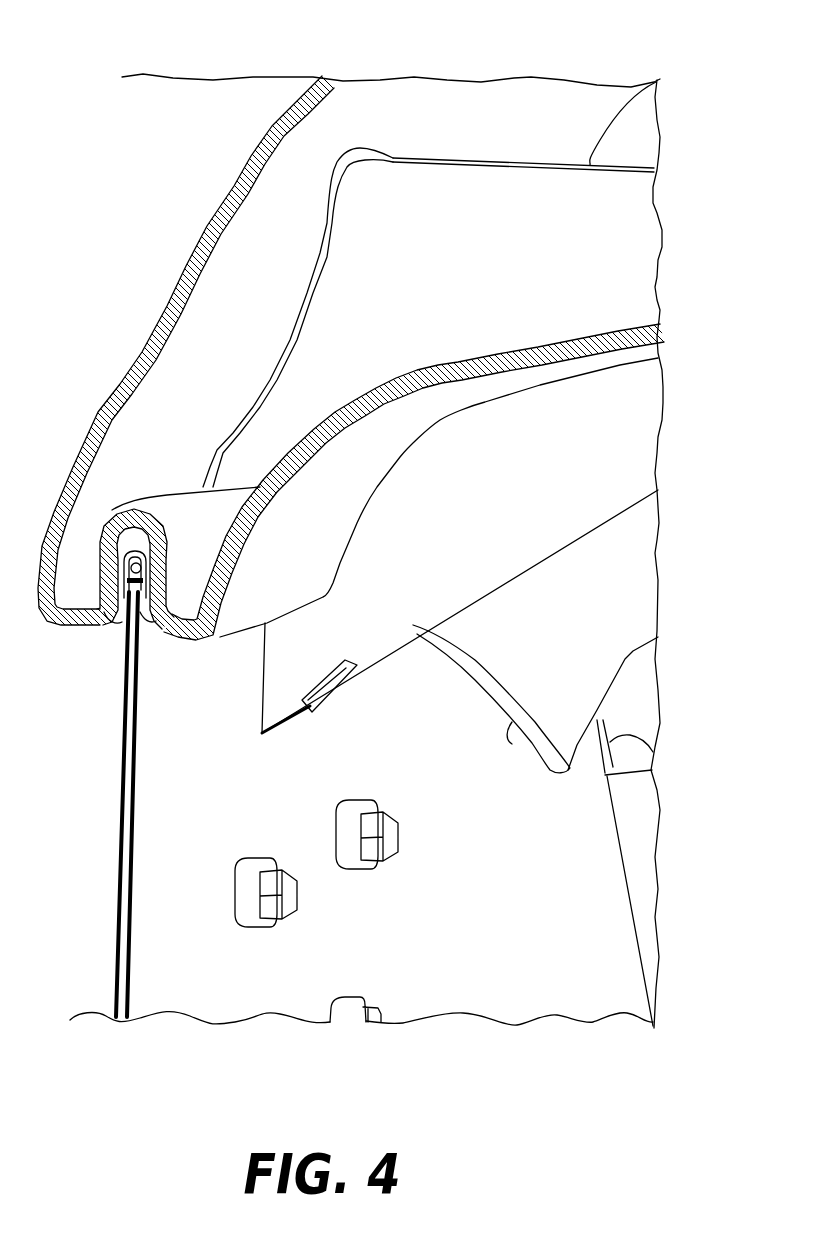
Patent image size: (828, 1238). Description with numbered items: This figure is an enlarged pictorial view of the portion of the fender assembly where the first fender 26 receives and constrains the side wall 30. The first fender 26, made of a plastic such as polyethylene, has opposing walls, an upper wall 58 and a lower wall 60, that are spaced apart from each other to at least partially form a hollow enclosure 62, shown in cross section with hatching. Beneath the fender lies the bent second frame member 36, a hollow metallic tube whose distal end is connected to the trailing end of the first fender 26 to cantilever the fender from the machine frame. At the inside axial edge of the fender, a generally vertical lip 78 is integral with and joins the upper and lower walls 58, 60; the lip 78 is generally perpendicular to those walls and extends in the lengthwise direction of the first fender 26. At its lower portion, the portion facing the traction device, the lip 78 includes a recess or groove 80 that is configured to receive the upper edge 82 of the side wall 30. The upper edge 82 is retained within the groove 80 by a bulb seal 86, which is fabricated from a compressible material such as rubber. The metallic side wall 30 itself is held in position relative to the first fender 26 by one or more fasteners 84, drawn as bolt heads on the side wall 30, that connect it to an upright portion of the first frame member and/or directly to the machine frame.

The first fender 26 is at (146, 208).
The upper wall 58 is at (274, 131).
The lower wall 60 is at (451, 374).
The hollow enclosure 62 is at (505, 259).
The second frame member 36 is at (548, 474).
The lip 78 is at (426, 530).
The groove 80 is at (135, 538).
The upper edge 82 is at (123, 619).
The fasteners 84 is at (263, 858).
The bulb seal 86 is at (137, 633).
The side wall 30 is at (541, 910).